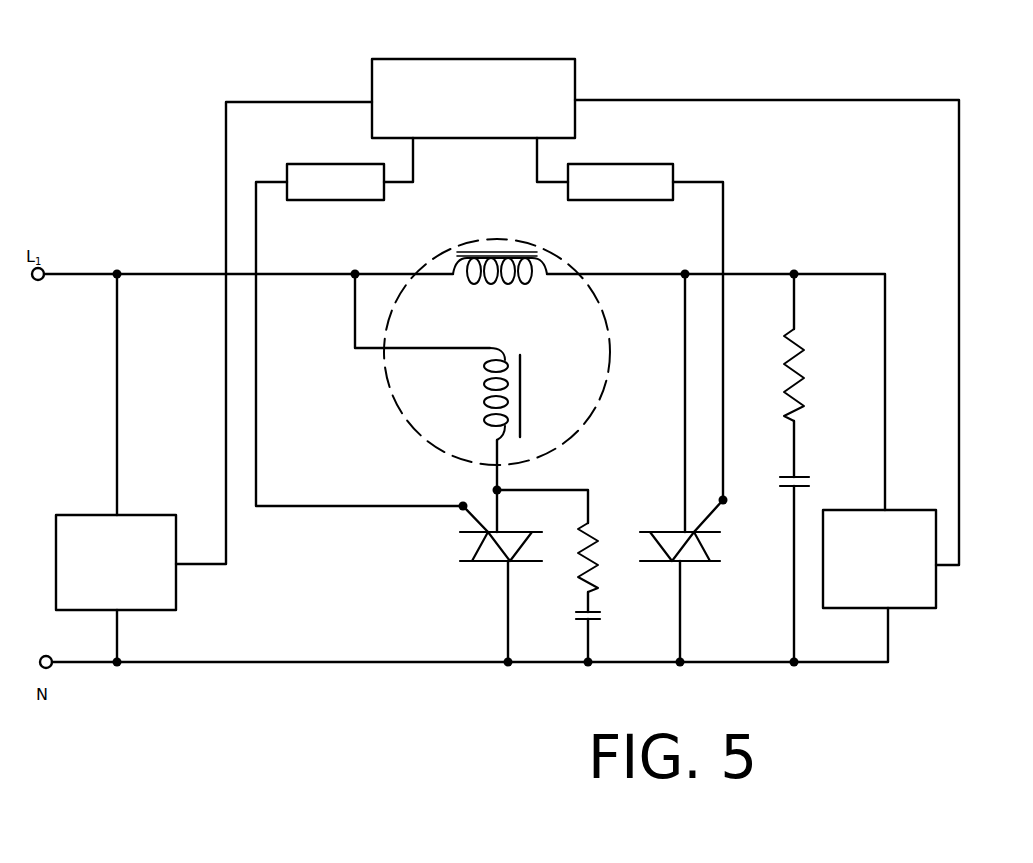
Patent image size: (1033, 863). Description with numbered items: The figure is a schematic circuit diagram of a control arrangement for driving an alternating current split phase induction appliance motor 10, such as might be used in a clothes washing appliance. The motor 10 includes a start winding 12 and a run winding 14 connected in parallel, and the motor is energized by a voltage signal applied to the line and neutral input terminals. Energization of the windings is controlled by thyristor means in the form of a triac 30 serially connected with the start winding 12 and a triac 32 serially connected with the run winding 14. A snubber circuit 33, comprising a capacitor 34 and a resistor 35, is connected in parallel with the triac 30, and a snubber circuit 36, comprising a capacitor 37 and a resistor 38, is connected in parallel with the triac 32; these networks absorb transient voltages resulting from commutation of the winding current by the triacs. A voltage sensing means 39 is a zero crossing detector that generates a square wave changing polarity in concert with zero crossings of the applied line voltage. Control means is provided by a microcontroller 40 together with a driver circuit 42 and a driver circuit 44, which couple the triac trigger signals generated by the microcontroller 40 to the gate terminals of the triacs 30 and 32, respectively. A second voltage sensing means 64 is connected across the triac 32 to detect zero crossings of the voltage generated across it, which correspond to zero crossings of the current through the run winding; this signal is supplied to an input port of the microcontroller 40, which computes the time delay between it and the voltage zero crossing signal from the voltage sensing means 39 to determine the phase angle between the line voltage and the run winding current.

The motor 10 is at (490, 237).
The start winding 12 is at (489, 400).
The run winding 14 is at (487, 285).
The triac 30 is at (472, 567).
The triac 32 is at (695, 563).
The snubber circuit 33 is at (584, 570).
The capacitor 34 is at (592, 623).
The resistor 35 is at (582, 560).
The snubber circuit 36 is at (815, 403).
The capacitor 37 is at (803, 478).
The resistor 38 is at (803, 359).
The voltage sensing means 39 is at (152, 515).
The microcontroller 40 is at (540, 59).
The driver circuit 42 is at (323, 200).
The driver circuit 44 is at (625, 200).
The second voltage sensing means 64 is at (907, 510).